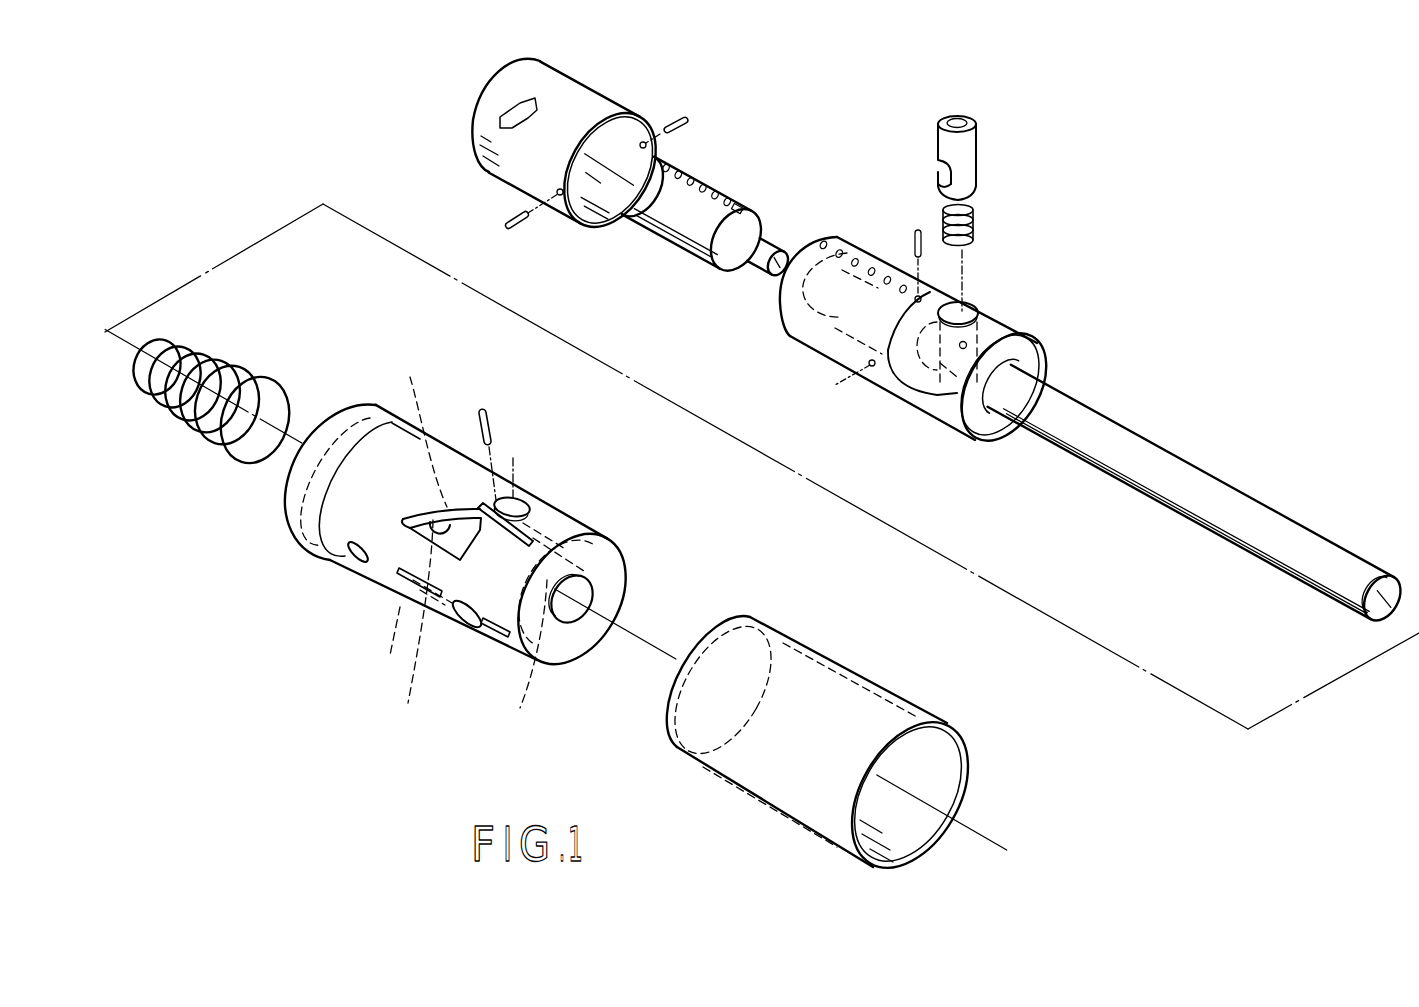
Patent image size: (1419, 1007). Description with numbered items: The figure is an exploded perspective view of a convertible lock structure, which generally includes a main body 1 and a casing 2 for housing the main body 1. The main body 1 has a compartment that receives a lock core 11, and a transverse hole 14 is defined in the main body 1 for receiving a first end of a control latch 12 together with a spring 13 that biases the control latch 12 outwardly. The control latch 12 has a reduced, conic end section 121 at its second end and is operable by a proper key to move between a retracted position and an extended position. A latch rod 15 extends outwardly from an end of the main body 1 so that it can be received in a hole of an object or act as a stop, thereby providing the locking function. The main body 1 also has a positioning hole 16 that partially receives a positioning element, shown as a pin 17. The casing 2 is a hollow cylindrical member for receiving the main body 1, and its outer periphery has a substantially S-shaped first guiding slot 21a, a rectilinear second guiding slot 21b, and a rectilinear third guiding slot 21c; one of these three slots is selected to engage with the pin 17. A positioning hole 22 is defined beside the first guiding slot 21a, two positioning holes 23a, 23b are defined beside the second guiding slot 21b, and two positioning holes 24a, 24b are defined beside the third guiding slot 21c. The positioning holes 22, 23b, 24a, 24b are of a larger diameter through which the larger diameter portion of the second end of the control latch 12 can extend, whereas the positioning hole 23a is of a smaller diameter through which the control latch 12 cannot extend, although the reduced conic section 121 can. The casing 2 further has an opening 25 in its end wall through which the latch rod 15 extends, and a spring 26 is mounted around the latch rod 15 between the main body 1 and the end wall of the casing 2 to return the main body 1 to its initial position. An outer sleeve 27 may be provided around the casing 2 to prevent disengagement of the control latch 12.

The main body 1 is at (1027, 350).
The casing 2 is at (587, 84).
The lock core 11 is at (753, 212).
The control latch 12 is at (970, 157).
The reduced conic end section 121 is at (964, 120).
The spring 13 is at (975, 225).
The transverse hole 14 is at (970, 316).
The latch rod 15 is at (1155, 462).
The positioning hole 16 is at (962, 348).
The pin 17 is at (483, 406).
The first guiding slot 21a is at (428, 553).
The second guiding slot 21b is at (411, 690).
The third guiding slot 21c is at (548, 560).
The positioning hole 22 is at (518, 503).
The positioning hole 23a is at (360, 568).
The positioning hole 23b is at (473, 605).
The positioning hole 24a is at (403, 530).
The positioning hole 24b is at (520, 710).
The opening 25 is at (562, 607).
The spring 26 is at (232, 463).
The outer sleeve 27 is at (828, 680).